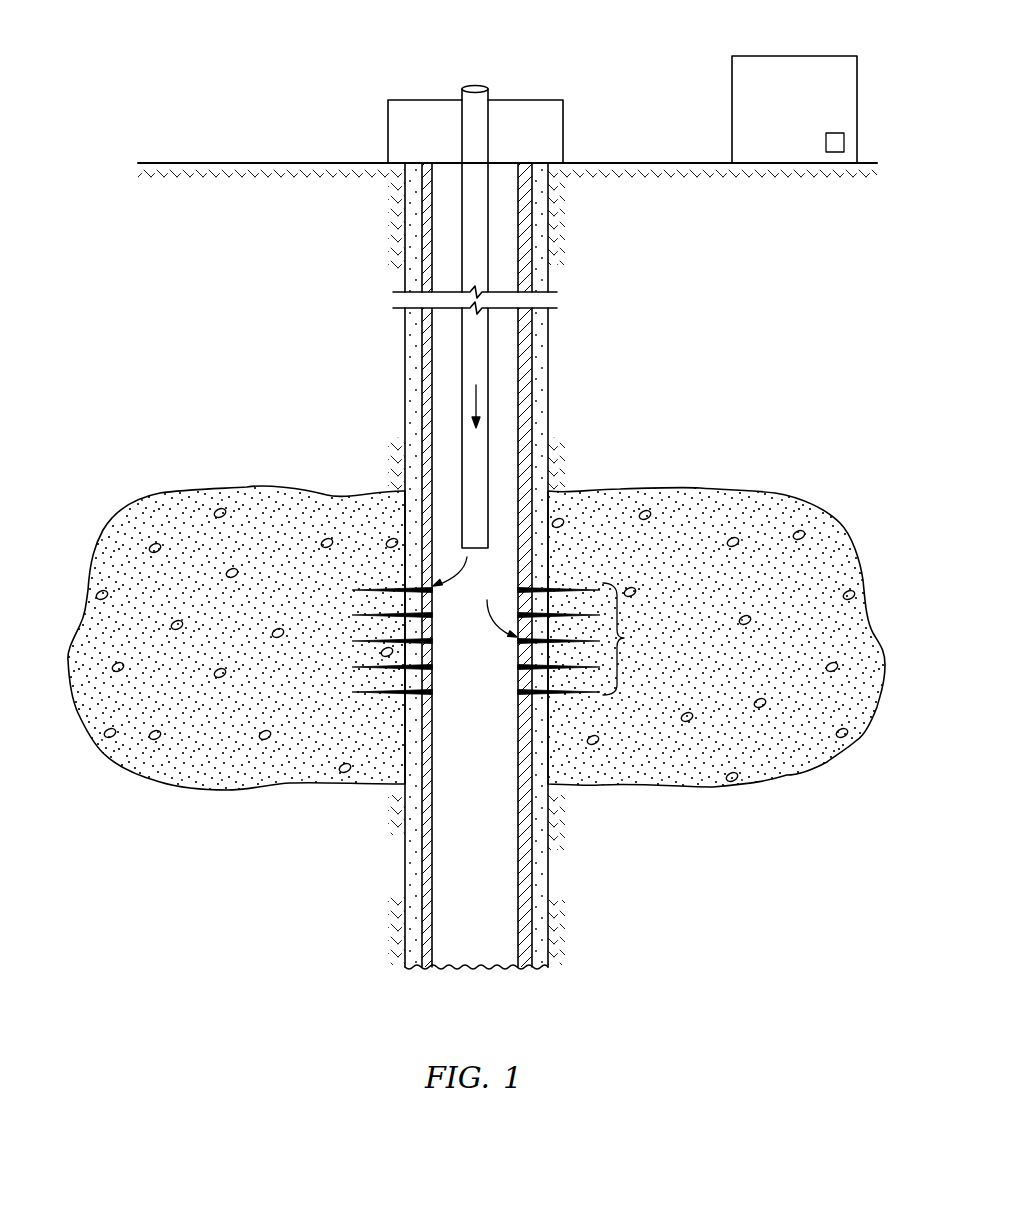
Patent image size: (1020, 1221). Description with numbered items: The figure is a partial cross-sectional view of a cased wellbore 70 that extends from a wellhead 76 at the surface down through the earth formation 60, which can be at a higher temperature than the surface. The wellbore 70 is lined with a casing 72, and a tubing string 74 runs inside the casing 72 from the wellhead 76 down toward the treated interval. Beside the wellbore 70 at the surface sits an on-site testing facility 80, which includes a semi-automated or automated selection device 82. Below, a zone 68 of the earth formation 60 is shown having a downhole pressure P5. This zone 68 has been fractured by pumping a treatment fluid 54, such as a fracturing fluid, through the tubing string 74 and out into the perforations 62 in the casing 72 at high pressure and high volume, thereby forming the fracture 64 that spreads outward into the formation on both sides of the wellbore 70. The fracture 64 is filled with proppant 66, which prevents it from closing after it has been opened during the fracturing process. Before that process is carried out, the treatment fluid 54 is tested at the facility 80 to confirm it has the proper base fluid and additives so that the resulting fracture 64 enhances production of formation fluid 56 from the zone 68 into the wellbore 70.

The treatment fluid 54 is at (475, 82).
The formation fluid 56 is at (702, 508).
The earth formation 60 is at (222, 358).
The perforations 62 is at (624, 638).
The fracture 64 is at (760, 503).
The proppant 66 is at (849, 591).
The zone 68 is at (904, 631).
The wellbore 70 is at (548, 420).
The casing 72 is at (532, 343).
The tubing string 74 is at (488, 127).
The wellhead 76 is at (547, 100).
The on-site testing facility 80 is at (774, 118).
The selection device 82 is at (844, 142).
The downhole pressure P5 is at (661, 840).